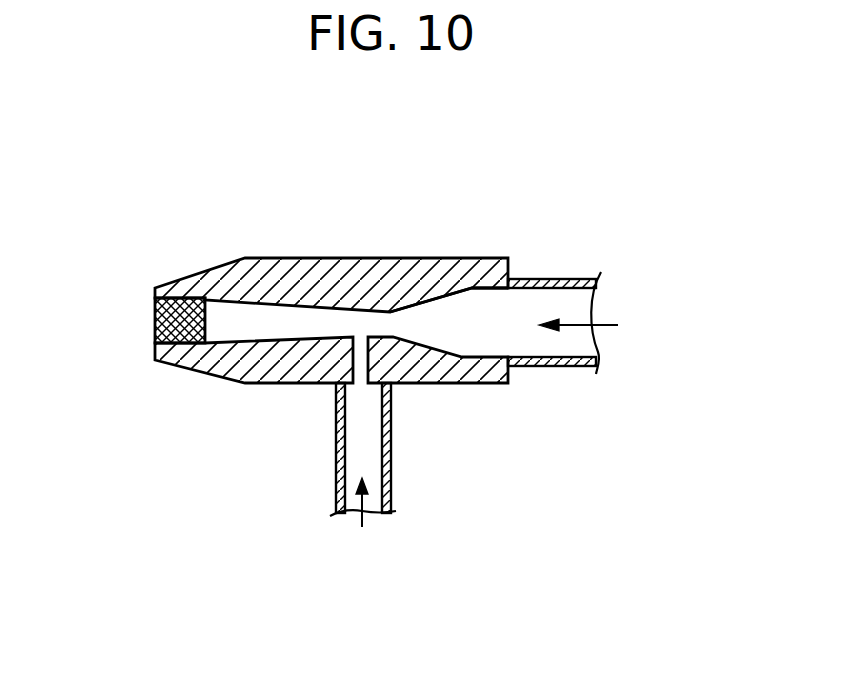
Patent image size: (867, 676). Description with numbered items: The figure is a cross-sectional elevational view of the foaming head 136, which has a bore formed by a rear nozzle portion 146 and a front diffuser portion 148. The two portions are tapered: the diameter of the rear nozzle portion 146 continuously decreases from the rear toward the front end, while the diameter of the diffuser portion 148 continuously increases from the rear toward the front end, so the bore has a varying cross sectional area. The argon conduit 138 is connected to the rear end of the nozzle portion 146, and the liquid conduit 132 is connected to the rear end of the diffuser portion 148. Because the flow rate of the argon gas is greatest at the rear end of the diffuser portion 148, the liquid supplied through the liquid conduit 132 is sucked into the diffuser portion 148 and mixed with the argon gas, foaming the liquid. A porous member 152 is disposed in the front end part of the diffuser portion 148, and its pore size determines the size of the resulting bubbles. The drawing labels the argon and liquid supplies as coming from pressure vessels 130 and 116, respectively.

The foaming head 136 is at (381, 226).
The front diffuser portion 148 is at (268, 310).
The rear nozzle portion 146 is at (435, 305).
The porous member 152 is at (157, 328).
The argon conduit 138 is at (552, 280).
The liquid conduit 132 is at (388, 457).
The pressure vessel 130 is at (647, 318).
The pressure vessel 116 is at (362, 566).